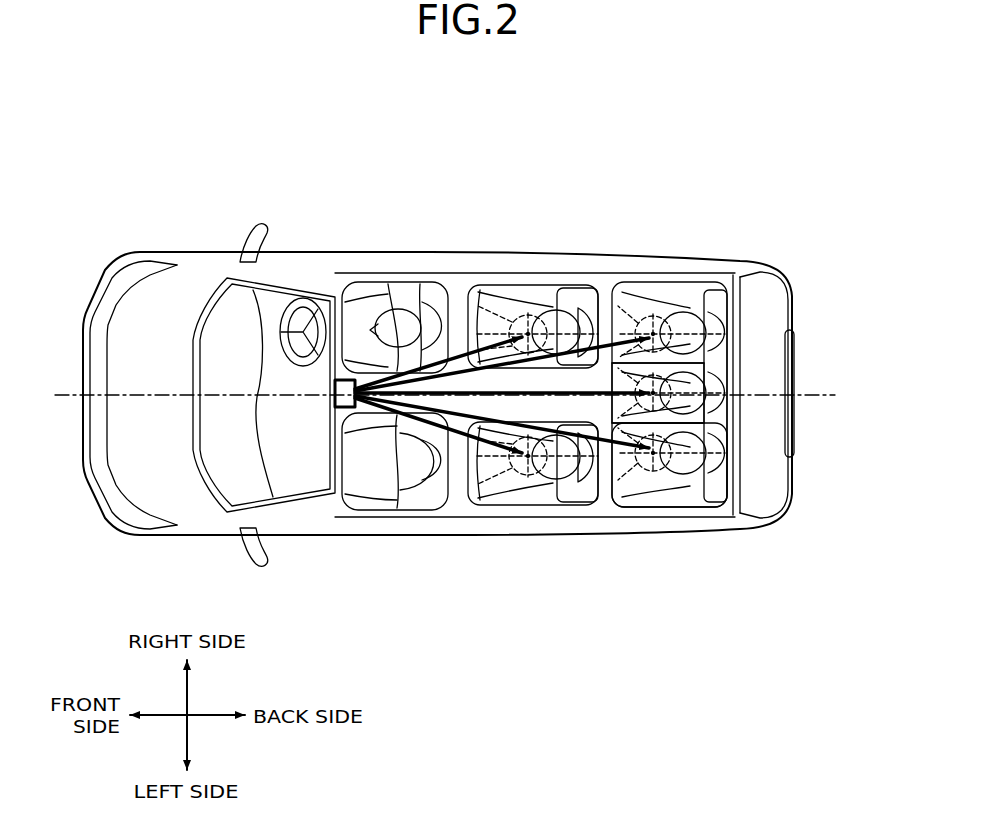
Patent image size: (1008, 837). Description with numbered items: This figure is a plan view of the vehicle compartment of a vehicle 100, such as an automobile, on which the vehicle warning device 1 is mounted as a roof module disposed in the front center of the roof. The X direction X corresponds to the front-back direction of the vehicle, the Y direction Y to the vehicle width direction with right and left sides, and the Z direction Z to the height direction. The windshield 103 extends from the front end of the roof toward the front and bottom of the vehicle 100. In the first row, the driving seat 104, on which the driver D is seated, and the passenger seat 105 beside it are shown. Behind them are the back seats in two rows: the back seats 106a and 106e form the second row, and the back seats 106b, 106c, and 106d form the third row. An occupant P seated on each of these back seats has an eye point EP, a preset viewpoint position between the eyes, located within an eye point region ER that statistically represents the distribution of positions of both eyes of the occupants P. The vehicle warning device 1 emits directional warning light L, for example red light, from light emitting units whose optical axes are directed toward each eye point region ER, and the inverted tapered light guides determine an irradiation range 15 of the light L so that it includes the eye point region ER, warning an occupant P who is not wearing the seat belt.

The vehicle 100 is at (422, 125).
The vehicle warning device 1 is at (344, 370).
The irradiation range 15 is at (452, 322).
The windshield 103 is at (275, 296).
The driving seat 104 is at (435, 281).
The passenger seat 105 is at (431, 513).
The back seat 106a is at (587, 506).
The back seat 106b is at (716, 506).
The back seat 106c is at (731, 383).
The back seat 106d is at (716, 284).
The back seat 106e is at (587, 284).
The driver D is at (399, 304).
The occupant P is at (566, 304).
The eye point EP is at (529, 322).
The eye point region ER is at (519, 625).
The light L is at (476, 330).
The X direction X is at (210, 717).
The Y direction Y is at (188, 692).
The Z direction Z is at (187, 717).